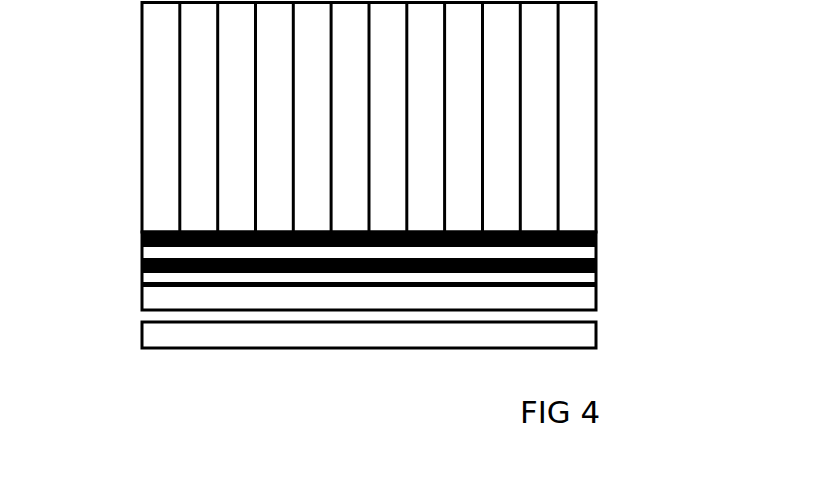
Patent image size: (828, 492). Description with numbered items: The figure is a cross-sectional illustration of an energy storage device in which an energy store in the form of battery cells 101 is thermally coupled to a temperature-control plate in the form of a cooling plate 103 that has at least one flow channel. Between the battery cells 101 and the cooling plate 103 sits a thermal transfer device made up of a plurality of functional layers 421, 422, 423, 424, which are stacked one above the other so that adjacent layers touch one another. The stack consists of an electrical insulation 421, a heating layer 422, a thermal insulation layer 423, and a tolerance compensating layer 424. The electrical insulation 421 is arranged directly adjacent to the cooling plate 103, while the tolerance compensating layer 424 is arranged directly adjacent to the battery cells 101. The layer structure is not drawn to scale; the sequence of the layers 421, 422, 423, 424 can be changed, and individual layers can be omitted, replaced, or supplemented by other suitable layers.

The battery cells 101 is at (573, 52).
The cooling plate 103 is at (612, 290).
The electrical insulation 421 is at (130, 293).
The heating layer 422 is at (127, 272).
The thermal insulation layer 423 is at (126, 249).
The tolerance compensating layer 424 is at (130, 226).